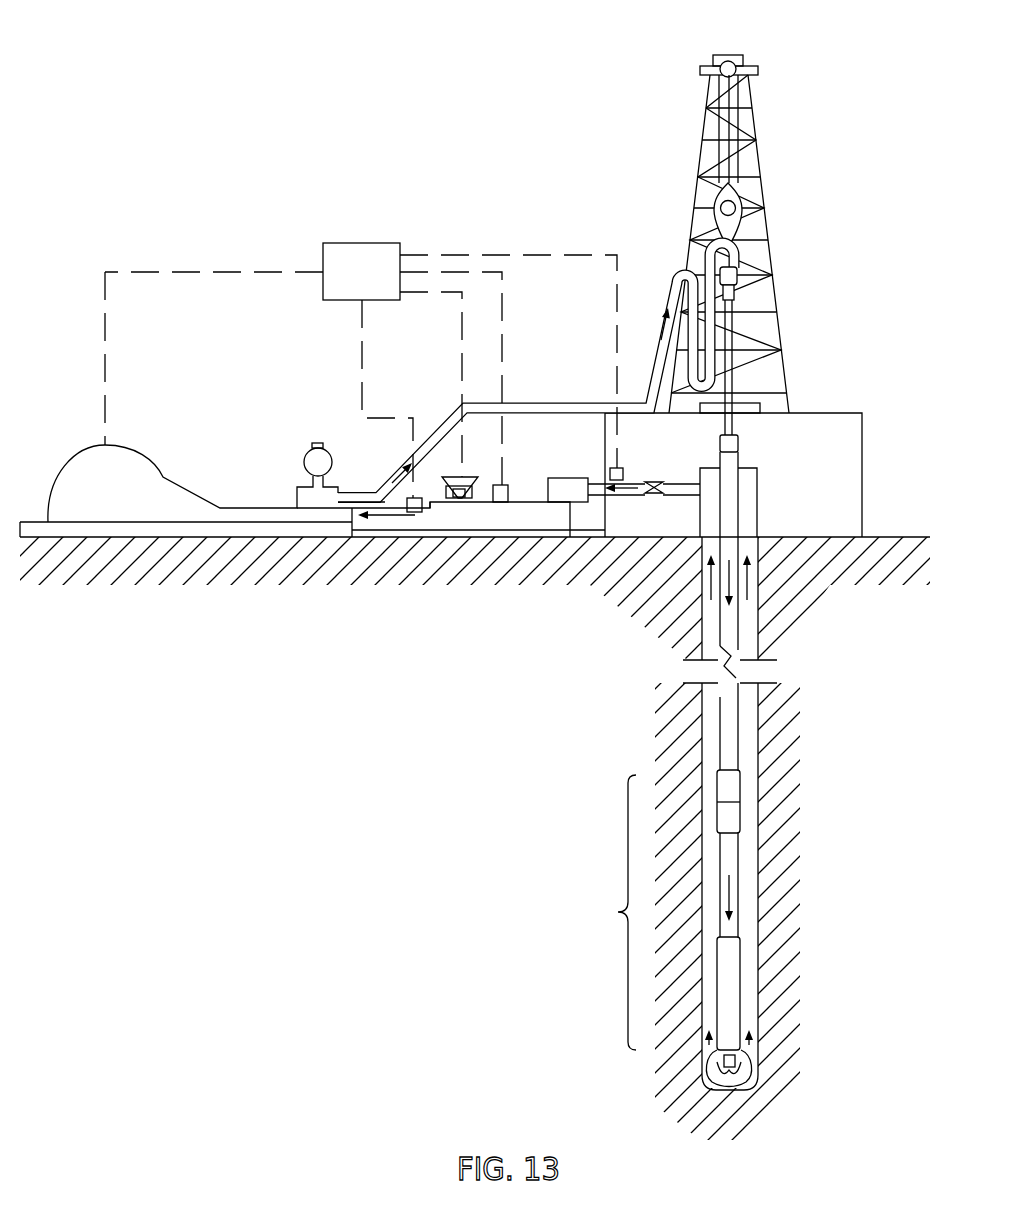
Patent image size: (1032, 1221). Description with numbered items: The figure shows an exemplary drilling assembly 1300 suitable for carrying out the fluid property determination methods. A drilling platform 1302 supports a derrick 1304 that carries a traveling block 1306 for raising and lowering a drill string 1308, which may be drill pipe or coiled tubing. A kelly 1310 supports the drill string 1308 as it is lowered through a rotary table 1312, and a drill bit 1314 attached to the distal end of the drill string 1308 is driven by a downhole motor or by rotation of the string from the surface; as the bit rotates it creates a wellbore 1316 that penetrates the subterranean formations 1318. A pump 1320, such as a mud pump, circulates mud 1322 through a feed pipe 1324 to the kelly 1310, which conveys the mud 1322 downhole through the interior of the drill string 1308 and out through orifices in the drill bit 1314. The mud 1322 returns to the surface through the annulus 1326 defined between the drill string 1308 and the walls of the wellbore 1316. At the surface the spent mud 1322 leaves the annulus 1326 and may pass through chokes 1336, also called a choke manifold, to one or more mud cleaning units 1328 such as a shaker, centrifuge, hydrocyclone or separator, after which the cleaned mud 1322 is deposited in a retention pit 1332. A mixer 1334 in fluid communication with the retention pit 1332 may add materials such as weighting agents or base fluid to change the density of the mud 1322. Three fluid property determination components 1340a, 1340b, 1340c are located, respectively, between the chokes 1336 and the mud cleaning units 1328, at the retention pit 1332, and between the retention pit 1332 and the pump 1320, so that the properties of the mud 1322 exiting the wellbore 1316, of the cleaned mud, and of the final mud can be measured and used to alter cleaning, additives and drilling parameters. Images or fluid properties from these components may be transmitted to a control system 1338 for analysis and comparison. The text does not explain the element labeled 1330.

The drilling assembly 1300 is at (426, 137).
The drilling platform 1302 is at (860, 426).
The derrick 1304 is at (760, 152).
The traveling block 1306 is at (743, 197).
The drill string 1308 is at (728, 646).
The kelly 1310 is at (732, 320).
The rotary table 1312 is at (762, 410).
The drill bit 1314 is at (752, 1060).
The wellbore 1316 is at (760, 732).
The subterranean formations 1318 is at (591, 765).
The pump 1320 is at (133, 502).
The mud 1322 is at (365, 493).
The feed pipe 1324 is at (548, 403).
The annulus 1326 is at (745, 890).
The mud cleaning unit 1328 is at (570, 478).
The wellhead 1330 is at (705, 495).
The retention pit 1332 is at (556, 537).
The mixer 1334 is at (456, 500).
The chokes 1336 is at (652, 497).
The control system 1338 is at (384, 284).
The fluid property determination component 1340a is at (621, 468).
The fluid property determination component 1340b is at (508, 493).
The fluid property determination component 1340c is at (413, 497).